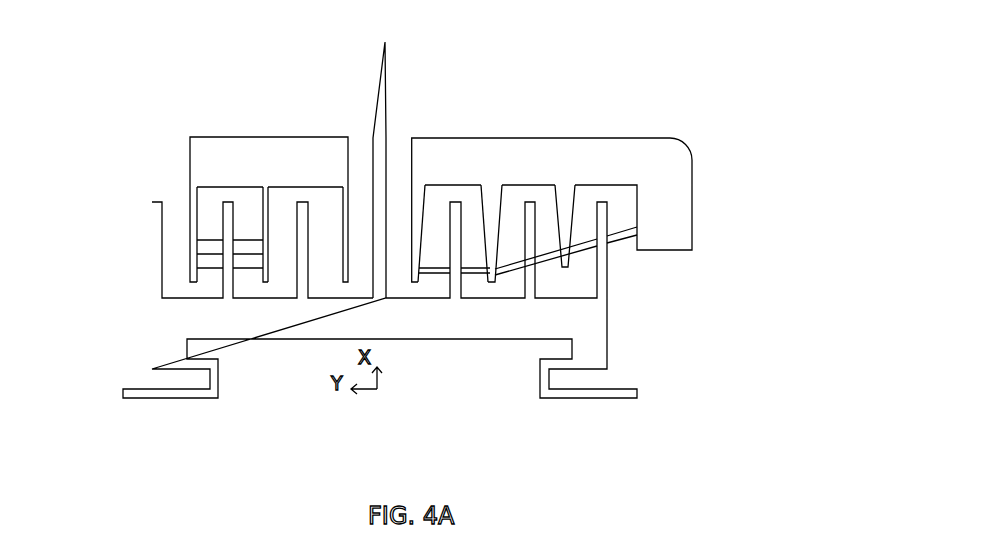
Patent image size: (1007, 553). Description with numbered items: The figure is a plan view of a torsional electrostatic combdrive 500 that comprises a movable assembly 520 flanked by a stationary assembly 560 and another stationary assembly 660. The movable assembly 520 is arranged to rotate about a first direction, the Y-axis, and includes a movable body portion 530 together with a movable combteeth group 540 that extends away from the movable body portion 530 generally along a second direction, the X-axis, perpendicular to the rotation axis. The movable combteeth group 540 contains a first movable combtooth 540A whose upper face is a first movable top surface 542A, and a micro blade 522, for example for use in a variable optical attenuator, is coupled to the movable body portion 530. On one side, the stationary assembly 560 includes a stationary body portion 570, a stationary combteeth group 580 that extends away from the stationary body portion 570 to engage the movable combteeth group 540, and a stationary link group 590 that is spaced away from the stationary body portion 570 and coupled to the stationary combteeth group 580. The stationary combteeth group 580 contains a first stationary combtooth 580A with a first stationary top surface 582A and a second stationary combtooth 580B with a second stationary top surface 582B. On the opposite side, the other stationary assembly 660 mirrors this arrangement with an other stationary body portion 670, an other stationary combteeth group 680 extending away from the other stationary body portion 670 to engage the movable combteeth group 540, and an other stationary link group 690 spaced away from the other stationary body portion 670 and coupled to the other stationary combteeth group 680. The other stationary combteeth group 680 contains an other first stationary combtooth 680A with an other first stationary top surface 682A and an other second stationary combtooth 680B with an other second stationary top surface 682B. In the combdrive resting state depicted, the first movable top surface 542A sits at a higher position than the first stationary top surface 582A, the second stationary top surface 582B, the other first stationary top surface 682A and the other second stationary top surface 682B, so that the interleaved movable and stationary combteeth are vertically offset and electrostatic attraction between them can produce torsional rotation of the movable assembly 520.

The torsional electrostatic combdrive 500 is at (772, 83).
The movable assembly 520 is at (737, 320).
The micro blade 522 is at (381, 152).
The movable body portion 530 is at (400, 331).
The movable combteeth group 540 is at (650, 275).
The first movable combtooth 540A is at (462, 288).
The first movable top surface 542A is at (452, 287).
The stationary assembly 560 is at (737, 165).
The stationary body portion 570 is at (596, 170).
The stationary combteeth group 580 is at (578, 207).
The first stationary combtooth 580A is at (408, 218).
The second stationary combtooth 580B is at (480, 217).
The first stationary top surface 582A is at (419, 195).
The second stationary top surface 582B is at (490, 200).
The stationary link group 590 is at (545, 240).
The other stationary assembly 660 is at (128, 163).
The other stationary body portion 670 is at (325, 170).
The other stationary combteeth group 680 is at (354, 213).
The other first stationary combtooth 680A is at (186, 218).
The other second stationary combtooth 680B is at (260, 219).
The other first stationary top surface 682A is at (193, 215).
The other second stationary top surface 682B is at (268, 212).
The other stationary link group 690 is at (215, 284).